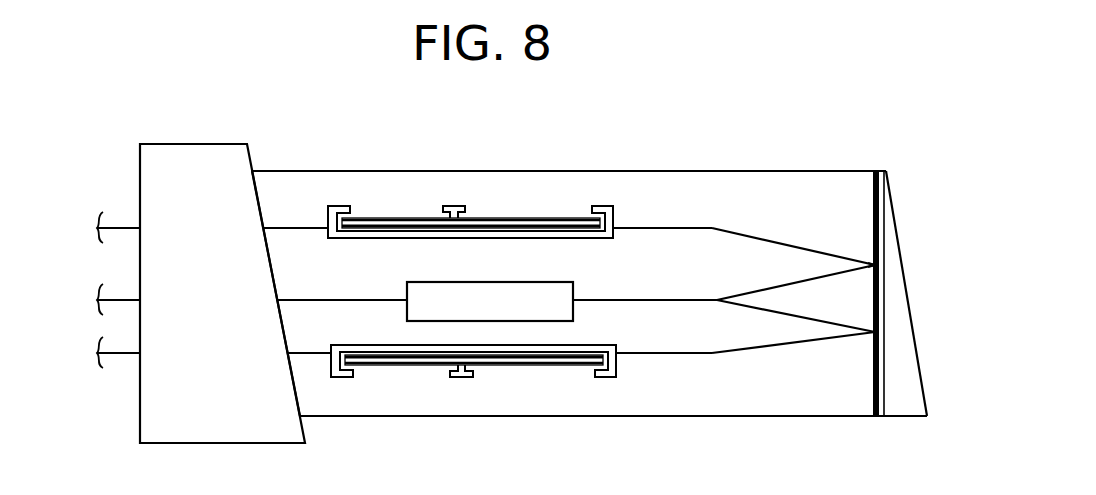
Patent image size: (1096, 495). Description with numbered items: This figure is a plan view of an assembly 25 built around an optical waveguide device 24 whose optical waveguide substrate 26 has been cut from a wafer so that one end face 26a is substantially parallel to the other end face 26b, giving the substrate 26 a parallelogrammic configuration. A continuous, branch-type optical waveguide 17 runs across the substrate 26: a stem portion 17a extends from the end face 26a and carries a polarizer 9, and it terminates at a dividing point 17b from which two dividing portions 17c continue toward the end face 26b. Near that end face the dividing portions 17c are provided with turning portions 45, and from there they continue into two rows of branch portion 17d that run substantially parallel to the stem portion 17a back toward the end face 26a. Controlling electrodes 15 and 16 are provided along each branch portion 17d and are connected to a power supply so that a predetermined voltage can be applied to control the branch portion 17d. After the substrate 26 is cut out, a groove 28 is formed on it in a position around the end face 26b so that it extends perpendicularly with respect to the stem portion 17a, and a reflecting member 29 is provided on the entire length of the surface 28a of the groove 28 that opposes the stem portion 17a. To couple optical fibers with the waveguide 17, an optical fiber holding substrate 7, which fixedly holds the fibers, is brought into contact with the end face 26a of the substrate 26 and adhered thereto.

The optical fiber holding substrate 7 is at (200, 163).
The polarizer 9 is at (565, 287).
The controlling electrode 15 is at (562, 217).
The controlling electrode 16 is at (366, 218).
The branch-type optical waveguide 17 is at (708, 223).
The stem portion 17a is at (318, 298).
The dividing point 17b is at (711, 298).
The dividing portion 17c is at (800, 343).
The branch portion 17d is at (662, 356).
The optical waveguide device 24 is at (670, 167).
The assembly 25 is at (782, 168).
The optical waveguide substrate 26 is at (428, 193).
The end face 26a is at (273, 284).
The end face 26b is at (900, 237).
The groove 28 is at (880, 222).
The surface of groove 28a is at (879, 363).
The reflecting member 29 is at (879, 312).
The turning portion 45 is at (879, 266).